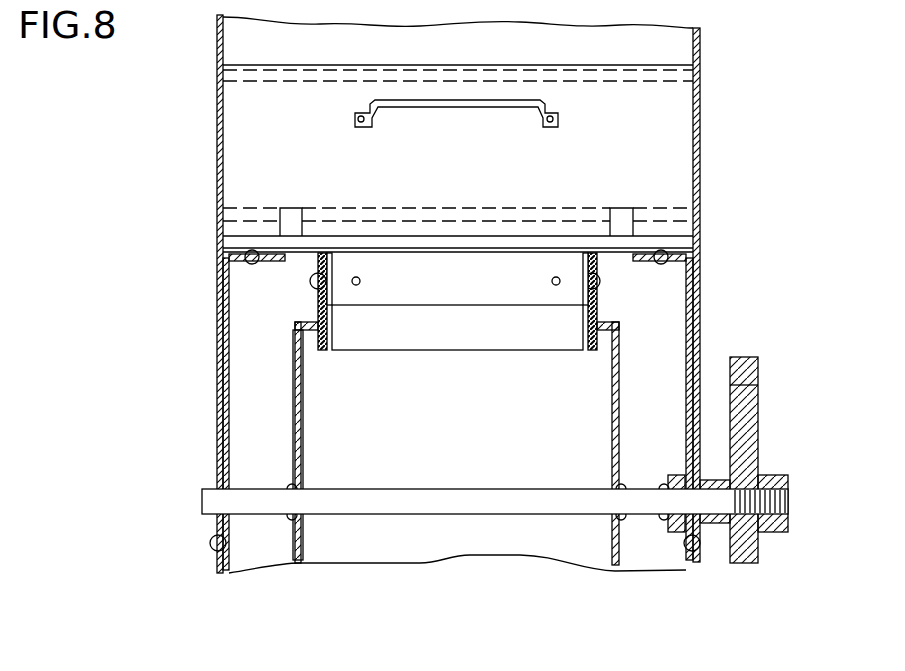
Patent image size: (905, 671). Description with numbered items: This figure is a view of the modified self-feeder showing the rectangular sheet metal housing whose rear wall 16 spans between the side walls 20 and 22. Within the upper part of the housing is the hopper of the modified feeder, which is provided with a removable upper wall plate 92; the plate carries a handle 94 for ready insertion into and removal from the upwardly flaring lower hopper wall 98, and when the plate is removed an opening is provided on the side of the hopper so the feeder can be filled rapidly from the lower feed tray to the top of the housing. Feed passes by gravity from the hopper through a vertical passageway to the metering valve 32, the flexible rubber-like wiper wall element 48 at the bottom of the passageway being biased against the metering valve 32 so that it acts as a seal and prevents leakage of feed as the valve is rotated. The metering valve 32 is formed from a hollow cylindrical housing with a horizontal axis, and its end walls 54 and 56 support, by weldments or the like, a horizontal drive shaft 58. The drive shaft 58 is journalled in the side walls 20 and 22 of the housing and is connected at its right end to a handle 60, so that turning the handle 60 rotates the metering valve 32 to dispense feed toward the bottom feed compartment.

The rear wall 16 is at (661, 33).
The side wall 20 is at (216, 110).
The side wall 22 is at (700, 178).
The metering valve 32 is at (297, 405).
The wiper wall element 48 is at (562, 326).
The end wall 54 is at (302, 415).
The end wall 56 is at (611, 400).
The drive shaft 58 is at (390, 489).
The handle 60 is at (760, 397).
The removable upper wall plate 92 is at (683, 112).
The handle 94 is at (467, 105).
The lower hopper wall 98 is at (683, 245).